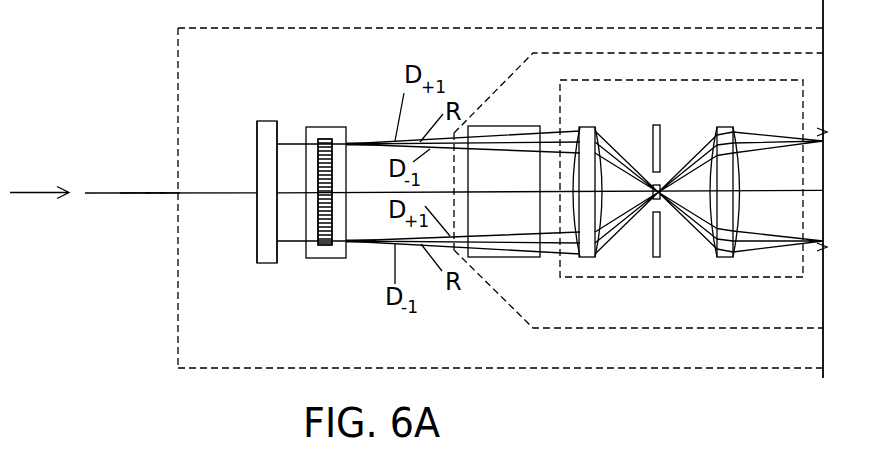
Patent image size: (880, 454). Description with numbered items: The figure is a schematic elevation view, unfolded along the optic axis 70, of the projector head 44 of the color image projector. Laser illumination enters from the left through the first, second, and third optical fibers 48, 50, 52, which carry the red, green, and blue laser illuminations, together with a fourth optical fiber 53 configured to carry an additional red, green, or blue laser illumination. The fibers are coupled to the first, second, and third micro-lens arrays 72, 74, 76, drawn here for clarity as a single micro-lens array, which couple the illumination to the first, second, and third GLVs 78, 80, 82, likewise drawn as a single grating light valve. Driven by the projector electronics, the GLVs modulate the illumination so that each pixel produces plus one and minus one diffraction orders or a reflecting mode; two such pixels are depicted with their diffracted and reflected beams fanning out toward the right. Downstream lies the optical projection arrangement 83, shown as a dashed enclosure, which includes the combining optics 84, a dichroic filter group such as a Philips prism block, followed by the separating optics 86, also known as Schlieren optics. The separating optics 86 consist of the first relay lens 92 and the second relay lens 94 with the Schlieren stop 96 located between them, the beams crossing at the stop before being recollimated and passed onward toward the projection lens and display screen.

The projector head 44 is at (563, 370).
The first optical fiber 48 is at (115, 194).
The second optical fiber 50 is at (135, 191).
The third optical fiber 52 is at (156, 194).
The fourth optical fiber 53 is at (167, 191).
The optic axis 70 is at (755, 172).
The first micro-lens array 72 is at (260, 264).
The second micro-lens array 74 is at (266, 264).
The third micro-lens array 76 is at (282, 264).
The first GLV 78 is at (313, 126).
The second GLV 80 is at (323, 126).
The third GLV 82 is at (334, 126).
The optical projection arrangement 83 is at (508, 303).
The combining optics 84 is at (497, 258).
The separating optics 86 is at (690, 278).
The first relay lens 92 is at (590, 126).
The second relay lens 94 is at (723, 125).
The Schlieren stop 96 is at (657, 124).